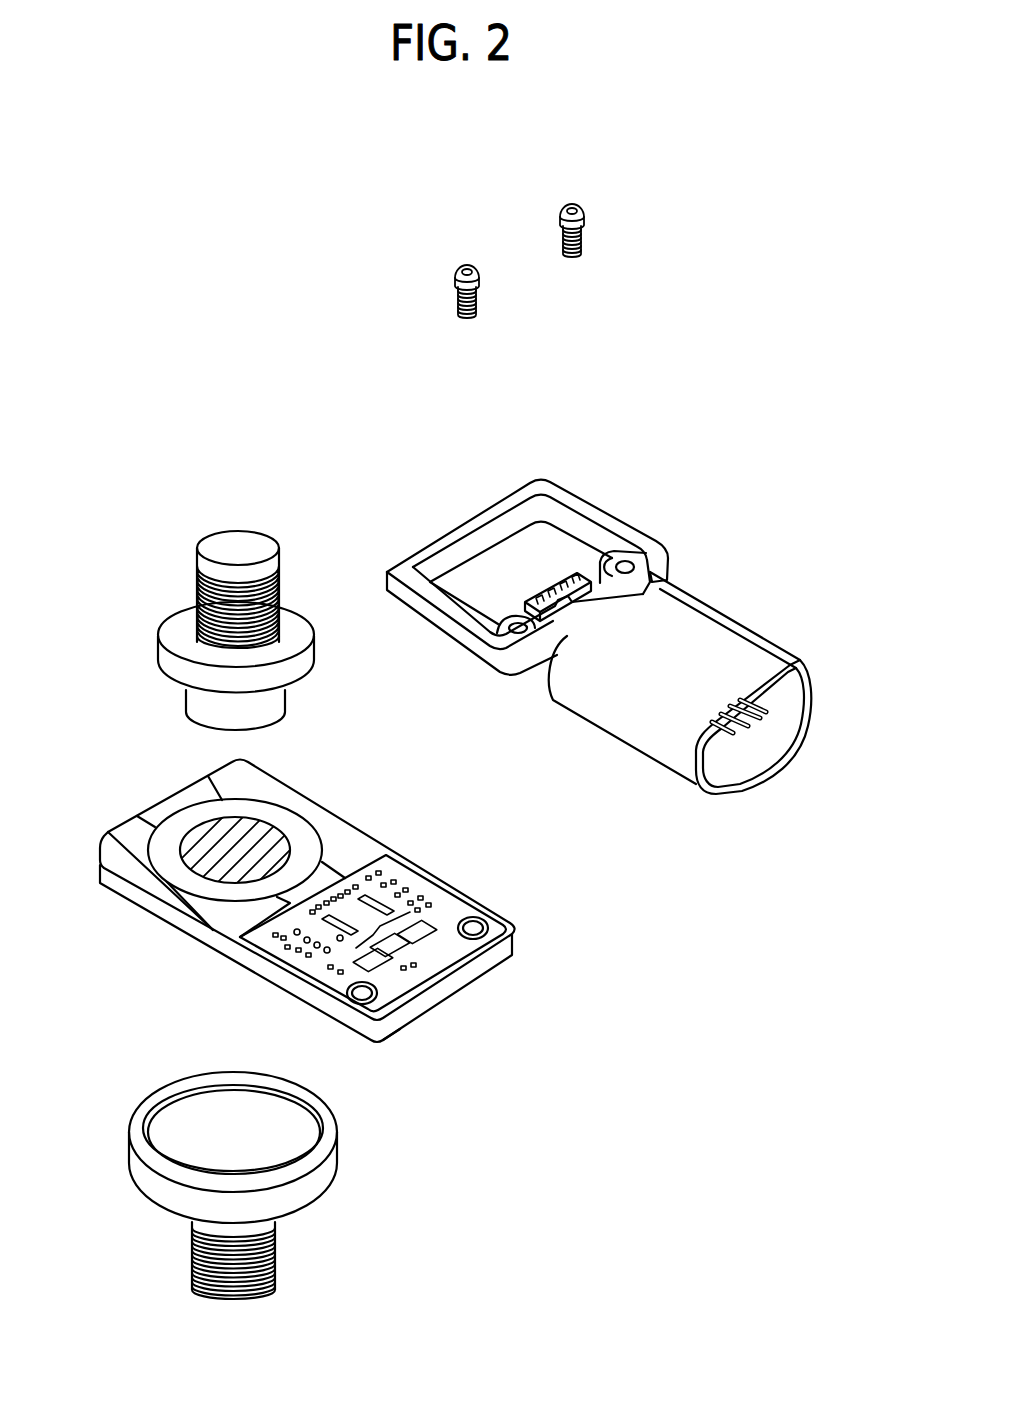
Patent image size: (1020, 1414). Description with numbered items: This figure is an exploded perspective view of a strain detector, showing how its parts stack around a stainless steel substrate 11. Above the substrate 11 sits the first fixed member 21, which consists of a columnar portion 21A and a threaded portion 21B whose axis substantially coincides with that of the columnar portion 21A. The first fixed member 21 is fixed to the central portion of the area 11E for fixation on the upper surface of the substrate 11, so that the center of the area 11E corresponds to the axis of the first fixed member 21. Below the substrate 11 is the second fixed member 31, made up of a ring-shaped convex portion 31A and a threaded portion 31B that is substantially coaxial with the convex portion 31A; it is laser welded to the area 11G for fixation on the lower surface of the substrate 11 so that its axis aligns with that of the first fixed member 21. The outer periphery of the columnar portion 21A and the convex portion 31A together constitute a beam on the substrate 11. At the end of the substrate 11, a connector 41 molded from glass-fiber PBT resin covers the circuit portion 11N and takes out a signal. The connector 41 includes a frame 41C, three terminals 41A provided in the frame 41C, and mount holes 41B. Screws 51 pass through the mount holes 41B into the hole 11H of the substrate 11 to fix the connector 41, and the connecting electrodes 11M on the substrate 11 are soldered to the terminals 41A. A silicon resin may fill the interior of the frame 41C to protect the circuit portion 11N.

The substrate 11 is at (312, 918).
The area for fixation 11E is at (223, 830).
The connecting electrodes 11M is at (378, 932).
The circuit portion 11N is at (308, 969).
The area for fixation 11G is at (400, 1027).
The hole 11H is at (477, 934).
The first fixed member 21 is at (194, 581).
The columnar portion 21A is at (205, 715).
The threaded portion 21B is at (195, 575).
The second fixed member 31 is at (296, 1185).
The ring-shaped convex portion 31A is at (330, 1128).
The threaded portion 31B is at (275, 1257).
The connector 41 is at (599, 602).
The terminals 41A is at (543, 577).
The mount holes 41B is at (515, 627).
The frame 41C is at (553, 488).
The screws 51 is at (558, 212).